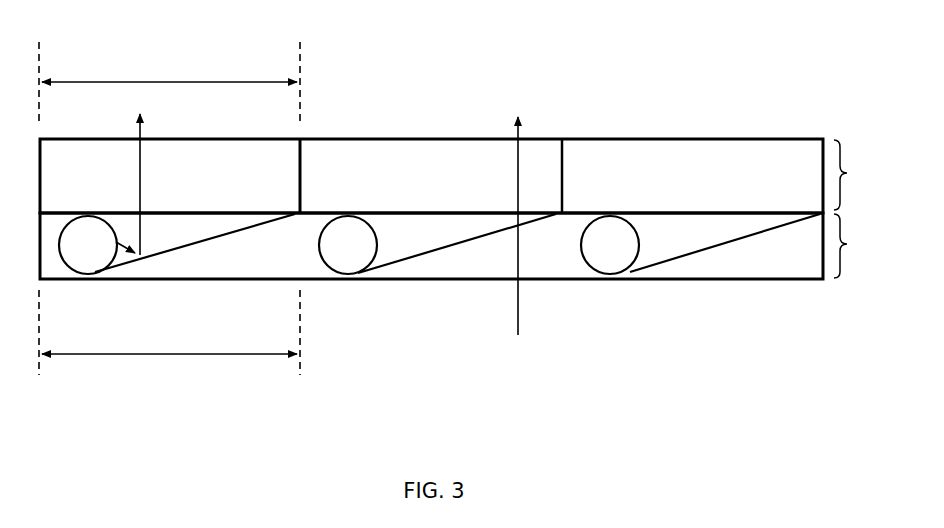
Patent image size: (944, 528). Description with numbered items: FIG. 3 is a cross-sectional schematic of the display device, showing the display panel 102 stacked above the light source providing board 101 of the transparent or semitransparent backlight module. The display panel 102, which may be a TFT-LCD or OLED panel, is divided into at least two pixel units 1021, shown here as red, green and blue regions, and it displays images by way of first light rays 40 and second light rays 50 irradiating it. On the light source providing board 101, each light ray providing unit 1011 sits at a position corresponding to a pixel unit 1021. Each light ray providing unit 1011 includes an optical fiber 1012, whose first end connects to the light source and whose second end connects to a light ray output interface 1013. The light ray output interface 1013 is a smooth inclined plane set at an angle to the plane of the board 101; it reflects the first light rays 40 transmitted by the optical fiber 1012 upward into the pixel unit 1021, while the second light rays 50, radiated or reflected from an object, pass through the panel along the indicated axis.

The light source providing board 101 is at (848, 244).
The display panel 102 is at (848, 173).
The light ray providing unit 1011 is at (170, 354).
The optical fiber 1012 is at (90, 277).
The light ray output interface 1013 is at (185, 248).
The pixel unit 1021 is at (155, 82).
The first light rays 40 is at (141, 132).
The second light rays 50 is at (518, 322).